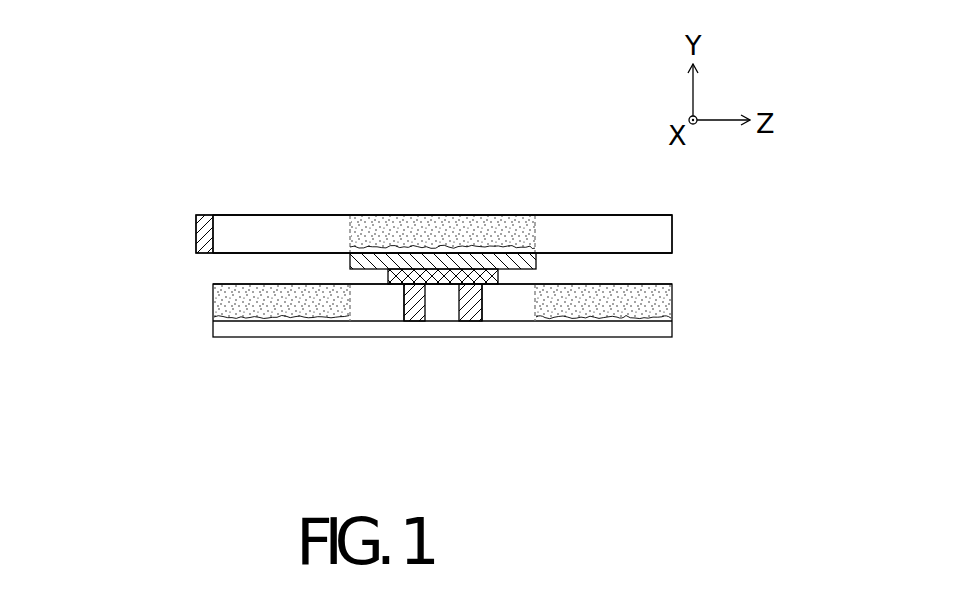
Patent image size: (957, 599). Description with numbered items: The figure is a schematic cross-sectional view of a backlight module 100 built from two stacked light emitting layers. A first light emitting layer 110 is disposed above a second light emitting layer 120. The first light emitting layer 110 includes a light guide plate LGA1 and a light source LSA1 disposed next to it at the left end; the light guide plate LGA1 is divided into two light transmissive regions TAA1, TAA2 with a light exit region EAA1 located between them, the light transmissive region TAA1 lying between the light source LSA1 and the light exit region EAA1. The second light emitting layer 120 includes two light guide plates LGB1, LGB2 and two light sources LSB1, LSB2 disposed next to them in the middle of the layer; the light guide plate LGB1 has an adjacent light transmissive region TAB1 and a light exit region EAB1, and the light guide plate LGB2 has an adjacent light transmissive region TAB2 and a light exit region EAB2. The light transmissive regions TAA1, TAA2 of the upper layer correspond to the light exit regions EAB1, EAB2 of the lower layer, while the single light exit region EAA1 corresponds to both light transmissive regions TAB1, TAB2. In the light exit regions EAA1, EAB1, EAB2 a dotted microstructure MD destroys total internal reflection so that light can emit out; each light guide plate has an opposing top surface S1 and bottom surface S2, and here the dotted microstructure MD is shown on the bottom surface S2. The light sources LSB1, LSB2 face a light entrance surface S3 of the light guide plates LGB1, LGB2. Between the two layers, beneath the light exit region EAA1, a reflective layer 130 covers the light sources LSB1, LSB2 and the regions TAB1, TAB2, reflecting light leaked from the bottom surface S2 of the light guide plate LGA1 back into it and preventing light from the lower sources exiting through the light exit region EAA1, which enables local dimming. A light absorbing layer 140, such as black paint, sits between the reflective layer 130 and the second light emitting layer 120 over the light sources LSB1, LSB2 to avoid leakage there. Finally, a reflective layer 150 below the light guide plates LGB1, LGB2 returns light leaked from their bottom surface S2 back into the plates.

The backlight module 100 is at (78, 54).
The first light emitting layer 110 is at (133, 232).
The second light emitting layer 120 is at (133, 315).
The reflective layer 130 is at (458, 262).
The light absorbing layer 140 is at (487, 280).
The reflective layer 150 is at (647, 328).
The light source LSA1 is at (210, 215).
The light guide plate LGA1 is at (672, 232).
The light transmissive region TAA1 is at (323, 233).
The light transmissive region TAA2 is at (595, 233).
The light exit region EAA1 is at (410, 233).
The dotted microstructure MD is at (372, 247).
The light guide plate LGB1 is at (211, 303).
The light guide plate LGB2 is at (672, 305).
The light source LSB1 is at (415, 322).
The light source LSB2 is at (468, 322).
The light transmissive region TAB1 is at (365, 313).
The light transmissive region TAB2 is at (527, 316).
The light exit region EAB1 is at (283, 305).
The light exit region EAB2 is at (603, 305).
The top surface S1 is at (265, 215).
The bottom surface S2 is at (240, 254).
The light entrance surface S3 is at (402, 306).